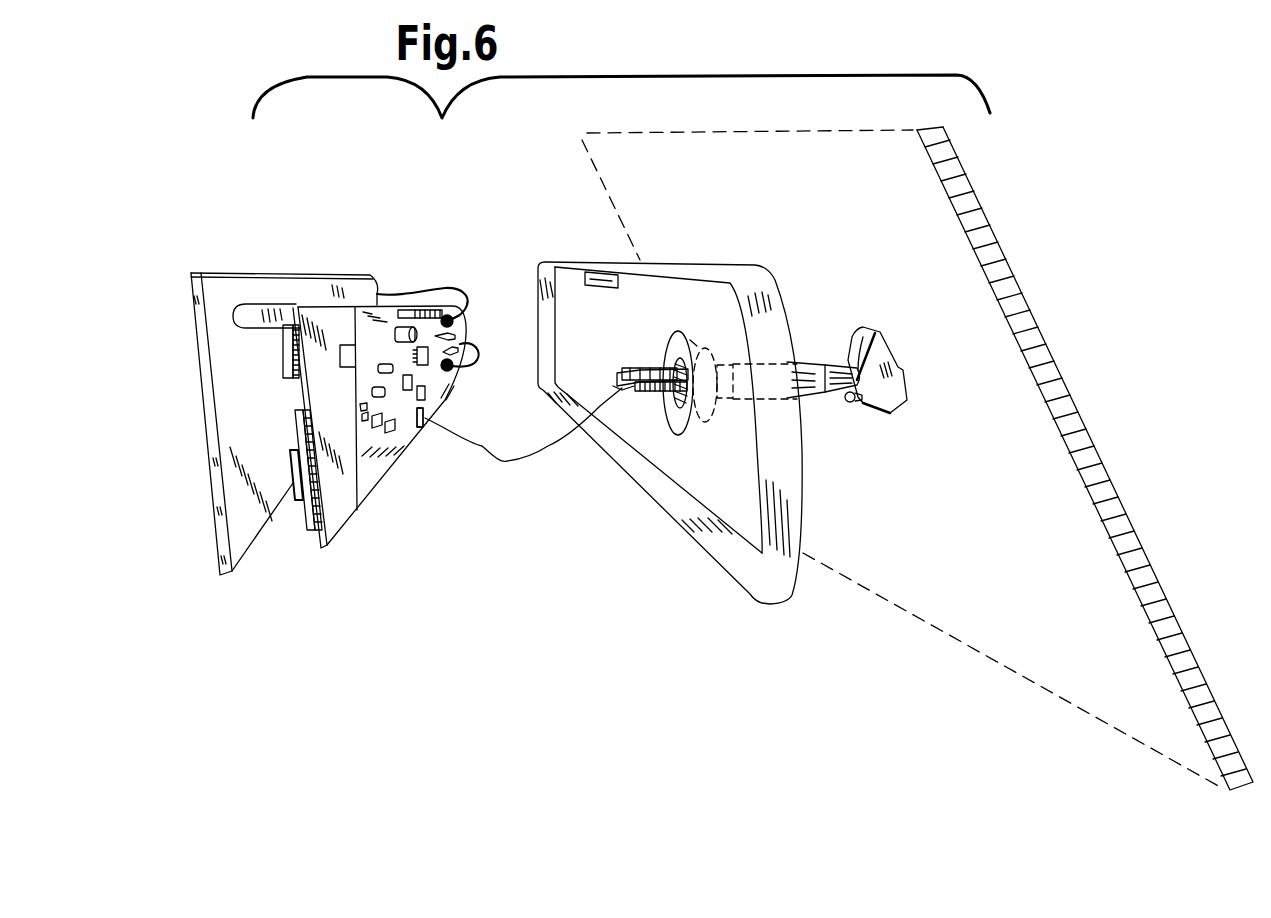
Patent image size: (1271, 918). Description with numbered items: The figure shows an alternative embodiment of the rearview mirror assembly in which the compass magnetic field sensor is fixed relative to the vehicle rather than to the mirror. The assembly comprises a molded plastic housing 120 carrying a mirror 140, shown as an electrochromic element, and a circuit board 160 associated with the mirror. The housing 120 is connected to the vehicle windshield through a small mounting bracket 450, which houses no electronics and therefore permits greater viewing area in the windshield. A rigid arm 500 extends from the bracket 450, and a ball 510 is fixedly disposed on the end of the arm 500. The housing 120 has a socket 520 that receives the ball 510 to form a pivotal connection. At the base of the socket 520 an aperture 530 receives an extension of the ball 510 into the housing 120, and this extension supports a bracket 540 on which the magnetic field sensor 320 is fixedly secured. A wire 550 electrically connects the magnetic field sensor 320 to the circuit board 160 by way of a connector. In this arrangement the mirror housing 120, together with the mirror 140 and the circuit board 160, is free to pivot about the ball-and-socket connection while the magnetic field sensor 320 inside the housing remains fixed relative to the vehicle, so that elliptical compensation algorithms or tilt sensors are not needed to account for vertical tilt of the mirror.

The housing 120 is at (778, 603).
The mirror 140 is at (238, 563).
The circuit board 160 is at (360, 500).
The magnetic field sensor 320 is at (616, 385).
The mounting bracket 450 is at (422, 417).
The rigid arm 500 is at (805, 370).
The ball 510 is at (723, 393).
The socket 520 is at (702, 375).
The aperture 530 is at (675, 433).
The bracket 540 is at (630, 383).
The wire 550 is at (506, 462).